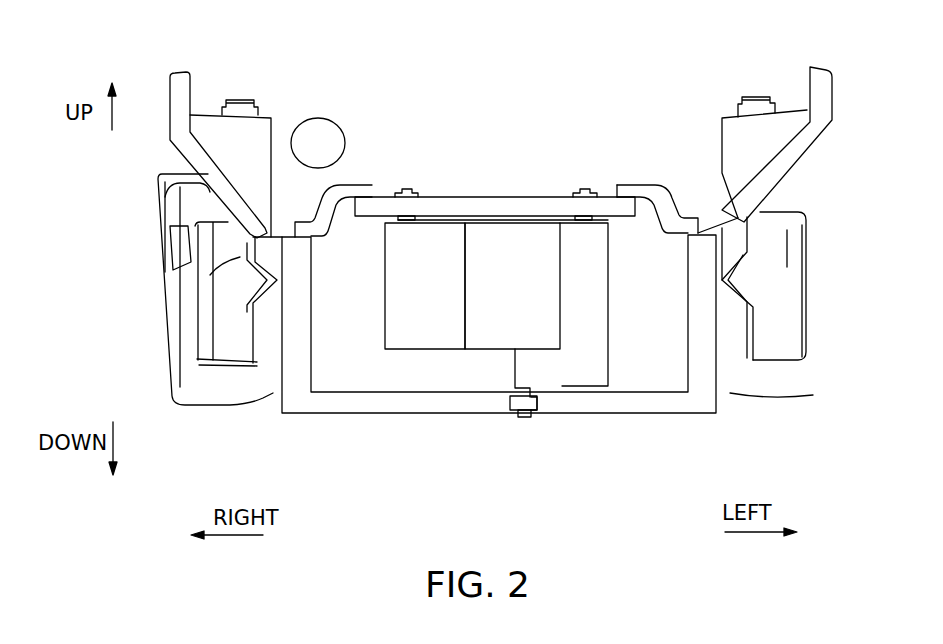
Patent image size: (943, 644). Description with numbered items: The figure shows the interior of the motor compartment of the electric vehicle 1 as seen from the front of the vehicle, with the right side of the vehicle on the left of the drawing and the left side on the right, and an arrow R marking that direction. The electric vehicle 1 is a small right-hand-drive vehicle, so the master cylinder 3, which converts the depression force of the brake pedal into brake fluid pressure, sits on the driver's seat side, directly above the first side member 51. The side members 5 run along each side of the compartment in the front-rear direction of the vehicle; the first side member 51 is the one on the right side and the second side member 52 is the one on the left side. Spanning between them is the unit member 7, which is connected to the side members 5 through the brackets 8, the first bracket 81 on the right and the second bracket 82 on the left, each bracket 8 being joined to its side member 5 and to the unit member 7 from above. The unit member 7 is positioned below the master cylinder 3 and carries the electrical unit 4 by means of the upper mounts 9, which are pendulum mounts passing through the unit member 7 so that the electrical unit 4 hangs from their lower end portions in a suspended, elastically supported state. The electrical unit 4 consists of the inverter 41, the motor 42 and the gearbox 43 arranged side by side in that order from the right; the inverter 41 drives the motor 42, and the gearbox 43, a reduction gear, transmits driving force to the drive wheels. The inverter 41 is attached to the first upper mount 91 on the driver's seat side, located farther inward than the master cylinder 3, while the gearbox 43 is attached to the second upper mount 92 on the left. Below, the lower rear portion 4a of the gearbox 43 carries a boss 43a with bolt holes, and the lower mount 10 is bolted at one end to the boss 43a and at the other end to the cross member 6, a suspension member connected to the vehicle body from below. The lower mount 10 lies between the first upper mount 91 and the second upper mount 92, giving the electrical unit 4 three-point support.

The electric vehicle 1 is at (172, 62).
The master cylinder 3 is at (317, 118).
The electrical unit 4 is at (617, 482).
The inverter 41 is at (420, 340).
The motor 42 is at (483, 340).
The gearbox 43 is at (562, 352).
The lower rear portion 4a is at (510, 377).
The boss 43a is at (537, 403).
The lower mount 10 is at (522, 418).
The side members 5 is at (491, 331).
The first side member 51 is at (297, 316).
The second side member 52 is at (700, 330).
The cross member 6 is at (333, 402).
The unit member 7 is at (490, 197).
The brackets 8 is at (518, 139).
The first bracket 81 is at (375, 193).
The second bracket 82 is at (658, 185).
The upper mounts 9 is at (498, 149).
The first upper mount 91 is at (417, 190).
The second upper mount 92 is at (575, 190).
The region R is at (263, 425).